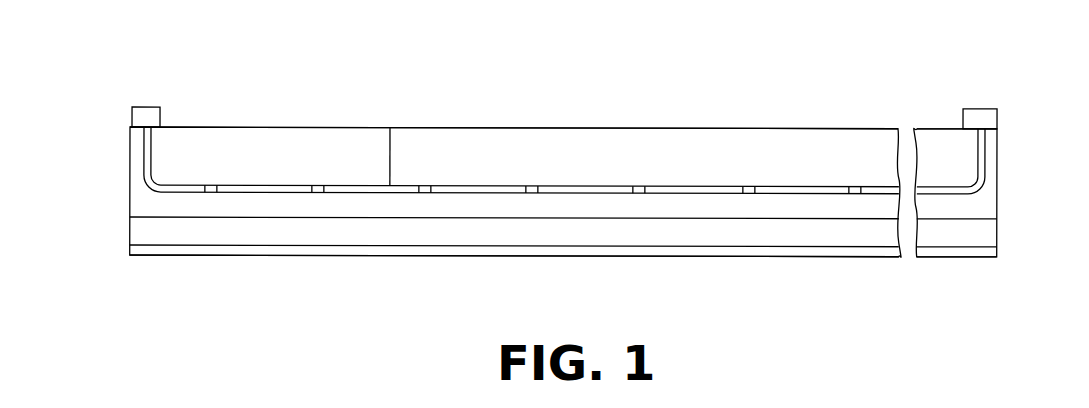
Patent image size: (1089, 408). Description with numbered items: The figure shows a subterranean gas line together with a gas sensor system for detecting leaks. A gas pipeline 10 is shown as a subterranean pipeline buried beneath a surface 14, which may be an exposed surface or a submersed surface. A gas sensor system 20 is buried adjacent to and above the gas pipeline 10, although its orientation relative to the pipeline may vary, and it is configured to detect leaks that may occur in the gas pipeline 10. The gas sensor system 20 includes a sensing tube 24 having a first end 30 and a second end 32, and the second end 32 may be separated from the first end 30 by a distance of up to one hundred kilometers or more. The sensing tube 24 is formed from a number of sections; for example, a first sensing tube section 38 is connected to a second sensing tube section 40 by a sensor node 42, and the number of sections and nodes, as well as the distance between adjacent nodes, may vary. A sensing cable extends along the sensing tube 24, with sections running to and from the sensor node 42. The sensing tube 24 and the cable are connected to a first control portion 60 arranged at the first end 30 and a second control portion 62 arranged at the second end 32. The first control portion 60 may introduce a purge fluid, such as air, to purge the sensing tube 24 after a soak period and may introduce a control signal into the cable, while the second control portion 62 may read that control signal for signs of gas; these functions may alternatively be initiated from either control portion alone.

The gas pipeline 10 is at (290, 256).
The surface 14 is at (812, 128).
The gas sensor system 20 is at (538, 180).
The sensing tube 24 is at (672, 196).
The first end 30 is at (145, 138).
The second end 32 is at (987, 153).
The first sensing tube section 38 is at (233, 190).
The second sensing tube section 40 is at (390, 127).
The sensor node 42 is at (322, 185).
The first control portion 60 is at (136, 105).
The second control portion 62 is at (983, 107).